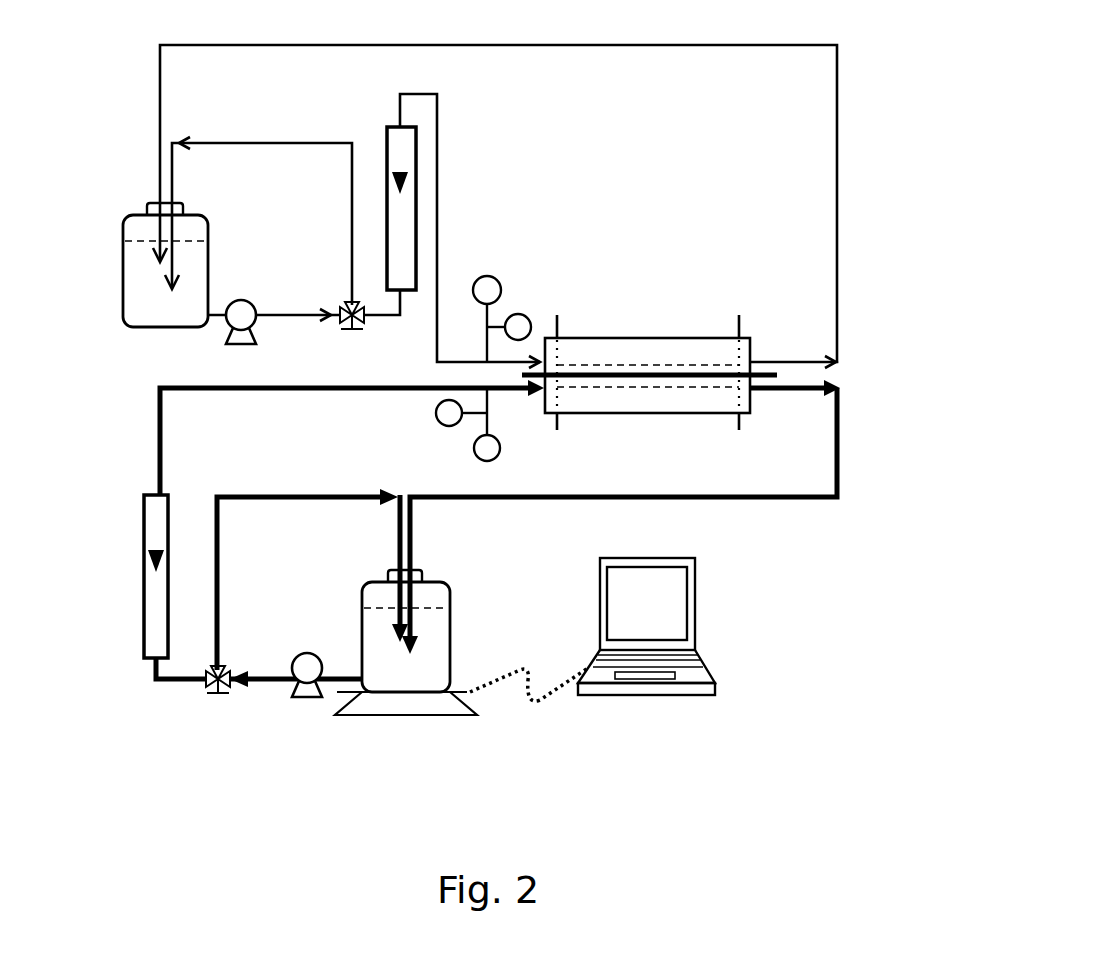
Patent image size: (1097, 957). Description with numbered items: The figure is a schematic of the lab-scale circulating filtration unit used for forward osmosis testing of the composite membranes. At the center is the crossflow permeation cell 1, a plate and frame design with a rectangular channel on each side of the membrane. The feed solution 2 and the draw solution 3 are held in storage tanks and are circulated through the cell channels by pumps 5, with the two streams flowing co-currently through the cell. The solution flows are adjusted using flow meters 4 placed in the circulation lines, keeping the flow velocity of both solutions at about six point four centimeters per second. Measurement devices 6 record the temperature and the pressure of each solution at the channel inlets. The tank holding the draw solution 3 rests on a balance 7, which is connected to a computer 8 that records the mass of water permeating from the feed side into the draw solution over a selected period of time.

The crossflow permeation cell 1 is at (649, 364).
The feed solution in storage tank 2 is at (190, 255).
The draw solution in storage tank 3 is at (432, 632).
The flow meters 4 is at (400, 182).
The pumps 5 is at (306, 652).
The measurement devices of temperature and pressure 6 is at (492, 313).
The balance 7 is at (404, 725).
The computer 8 is at (677, 608).